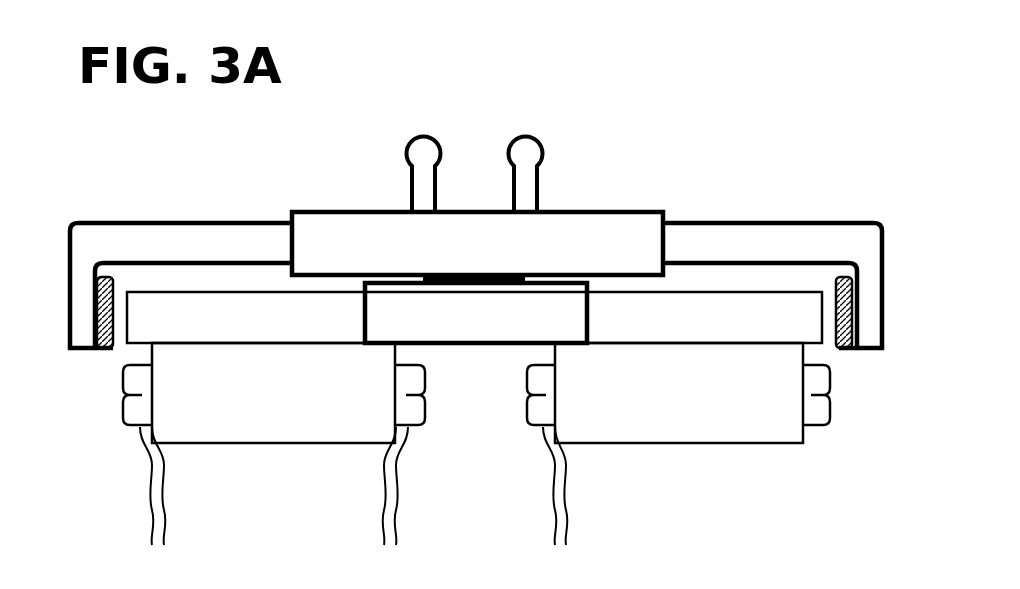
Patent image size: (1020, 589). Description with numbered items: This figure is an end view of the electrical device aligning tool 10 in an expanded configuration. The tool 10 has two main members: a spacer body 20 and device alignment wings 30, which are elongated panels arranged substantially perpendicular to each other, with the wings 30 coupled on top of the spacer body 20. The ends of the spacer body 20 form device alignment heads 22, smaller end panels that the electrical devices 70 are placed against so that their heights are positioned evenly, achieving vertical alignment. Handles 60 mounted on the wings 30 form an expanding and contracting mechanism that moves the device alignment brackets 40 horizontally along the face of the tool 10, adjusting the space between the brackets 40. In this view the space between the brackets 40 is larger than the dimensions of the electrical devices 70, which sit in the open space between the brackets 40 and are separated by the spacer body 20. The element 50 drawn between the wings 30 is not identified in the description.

The electrical device aligning tool 10 is at (553, 78).
The spacer body 20 is at (491, 354).
The device alignment heads 22 is at (587, 327).
The device alignment wings 30 is at (202, 214).
The device alignment brackets 40 is at (82, 358).
The sensor body 50 is at (477, 243).
The handles 60 is at (400, 155).
The electrical devices 70 is at (677, 452).